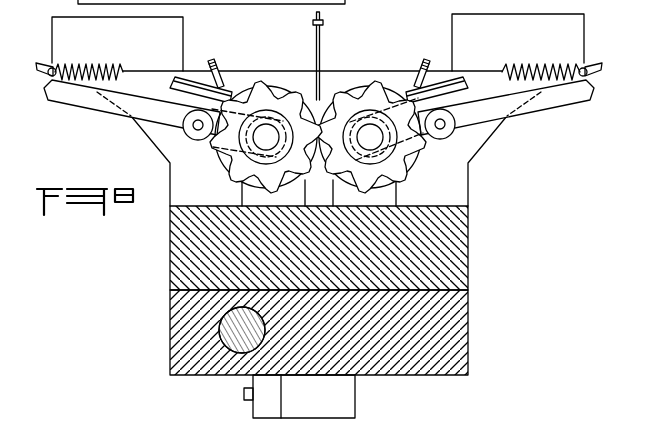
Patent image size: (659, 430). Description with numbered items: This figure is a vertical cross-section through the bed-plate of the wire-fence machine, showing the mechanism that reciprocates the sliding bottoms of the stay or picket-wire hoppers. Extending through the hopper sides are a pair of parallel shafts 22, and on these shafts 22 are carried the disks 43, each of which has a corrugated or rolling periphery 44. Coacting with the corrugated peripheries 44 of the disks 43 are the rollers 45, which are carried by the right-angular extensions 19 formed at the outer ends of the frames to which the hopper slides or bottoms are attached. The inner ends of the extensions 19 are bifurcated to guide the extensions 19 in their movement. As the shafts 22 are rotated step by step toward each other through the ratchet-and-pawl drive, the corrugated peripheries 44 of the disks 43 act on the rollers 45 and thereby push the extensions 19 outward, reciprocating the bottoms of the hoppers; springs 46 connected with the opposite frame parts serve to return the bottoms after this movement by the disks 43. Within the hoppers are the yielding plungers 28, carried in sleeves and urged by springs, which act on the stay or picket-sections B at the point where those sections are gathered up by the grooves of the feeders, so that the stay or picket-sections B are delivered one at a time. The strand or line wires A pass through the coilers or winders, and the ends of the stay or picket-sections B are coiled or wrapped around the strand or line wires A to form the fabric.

The strand or line wires A is at (445, 263).
The stay or picket-sections B is at (312, 21).
The right-angular extensions 19 is at (107, 107).
The shafts 22 is at (318, 137).
The yielding plungers 28 is at (223, 43).
The disks 43 is at (267, 92).
The corrugated or rolling peripheries 44 is at (242, 182).
The rollers 45 is at (195, 137).
The springs 46 is at (143, 50).